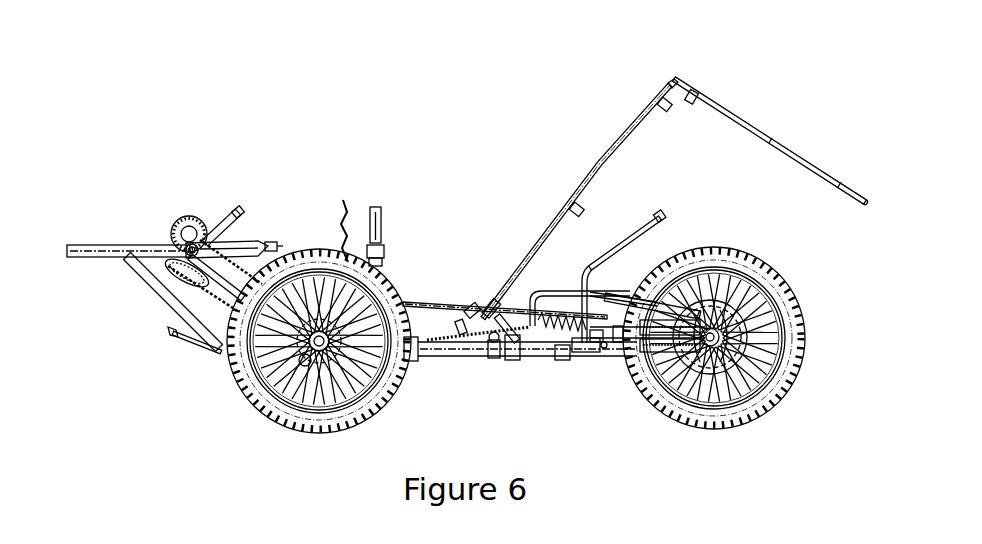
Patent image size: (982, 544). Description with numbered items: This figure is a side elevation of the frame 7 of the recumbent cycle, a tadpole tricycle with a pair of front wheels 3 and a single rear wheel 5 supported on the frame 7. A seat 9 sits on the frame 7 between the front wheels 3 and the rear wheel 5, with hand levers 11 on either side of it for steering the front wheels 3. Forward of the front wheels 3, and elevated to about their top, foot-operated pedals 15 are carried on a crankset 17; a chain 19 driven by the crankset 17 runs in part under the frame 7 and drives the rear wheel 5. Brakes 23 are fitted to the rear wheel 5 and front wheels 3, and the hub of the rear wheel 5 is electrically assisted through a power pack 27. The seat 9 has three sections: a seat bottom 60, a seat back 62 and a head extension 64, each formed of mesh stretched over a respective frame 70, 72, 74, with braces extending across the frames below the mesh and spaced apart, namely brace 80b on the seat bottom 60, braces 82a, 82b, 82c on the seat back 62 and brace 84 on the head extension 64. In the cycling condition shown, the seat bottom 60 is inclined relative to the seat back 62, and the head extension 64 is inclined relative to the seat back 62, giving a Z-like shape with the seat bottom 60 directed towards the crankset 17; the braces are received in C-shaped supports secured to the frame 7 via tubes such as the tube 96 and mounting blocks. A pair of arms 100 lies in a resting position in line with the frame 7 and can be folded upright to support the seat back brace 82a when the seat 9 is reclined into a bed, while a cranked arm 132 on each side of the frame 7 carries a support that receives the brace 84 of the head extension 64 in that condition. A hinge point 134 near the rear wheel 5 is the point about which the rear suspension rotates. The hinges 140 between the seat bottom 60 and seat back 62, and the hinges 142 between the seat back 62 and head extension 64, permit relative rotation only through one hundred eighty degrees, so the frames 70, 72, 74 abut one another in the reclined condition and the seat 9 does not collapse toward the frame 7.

The front wheels 3 is at (256, 404).
The rear wheel 5 is at (762, 266).
The frame 7 is at (470, 358).
The seat 9 is at (514, 146).
The hand levers 11 is at (373, 206).
The pedals 15 is at (270, 242).
The crankset 17 is at (189, 230).
The chain 19 is at (200, 290).
The brakes 23 is at (330, 347).
The power pack 27 is at (666, 342).
The seat bottom 60 is at (444, 288).
The seat back 62 is at (596, 142).
The head extension 64 is at (775, 126).
The seat bottom frame 70 is at (408, 302).
The seat back frame 72 is at (614, 150).
The head extension frame 74 is at (827, 170).
The seat bottom brace 80b is at (462, 333).
The seat back brace 82a is at (499, 314).
The seat back brace 82b is at (578, 216).
The seat back brace 82c is at (661, 103).
The head extension brace 84 is at (692, 102).
The tube 96 is at (507, 332).
The arms 100 is at (196, 345).
The cranked arm 132 is at (621, 252).
The hinge point 134 is at (579, 354).
The hinge 140 is at (472, 308).
The hinge 142 is at (676, 78).